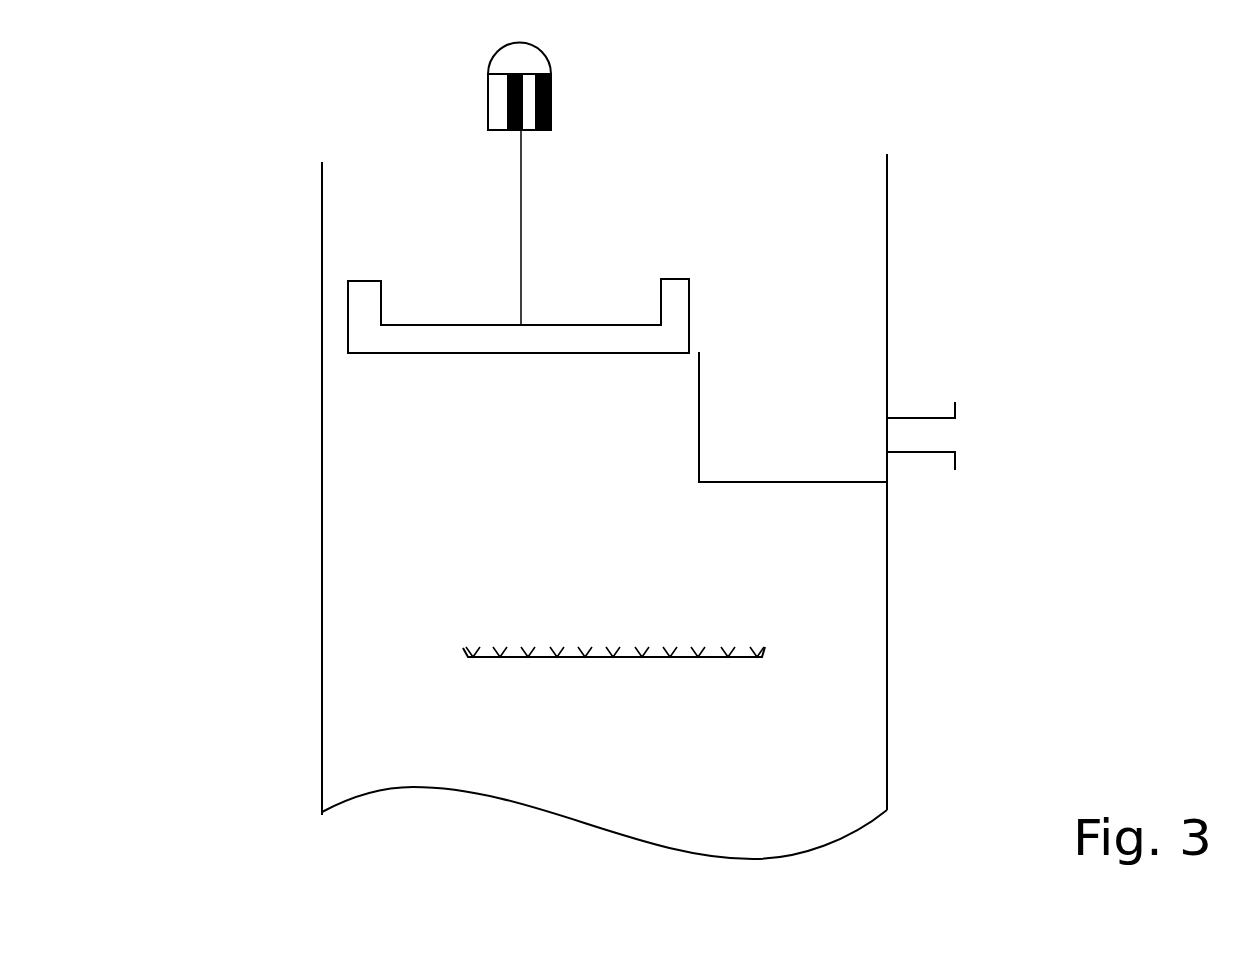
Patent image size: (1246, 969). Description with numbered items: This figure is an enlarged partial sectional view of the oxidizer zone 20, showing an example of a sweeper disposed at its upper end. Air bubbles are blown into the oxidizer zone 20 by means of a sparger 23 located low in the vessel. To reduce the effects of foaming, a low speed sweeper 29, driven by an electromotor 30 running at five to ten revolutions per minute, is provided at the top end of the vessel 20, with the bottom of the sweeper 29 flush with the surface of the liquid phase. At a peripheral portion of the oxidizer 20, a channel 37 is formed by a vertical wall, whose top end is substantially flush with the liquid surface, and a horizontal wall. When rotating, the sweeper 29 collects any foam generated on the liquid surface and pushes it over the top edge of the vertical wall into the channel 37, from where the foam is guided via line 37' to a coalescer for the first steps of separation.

The oxidizer zone 20 is at (341, 496).
The electromotor 30 is at (532, 62).
The sweeper 29 is at (676, 298).
The channel 37 is at (858, 394).
The line 37' is at (998, 434).
The sparger 23 is at (765, 647).